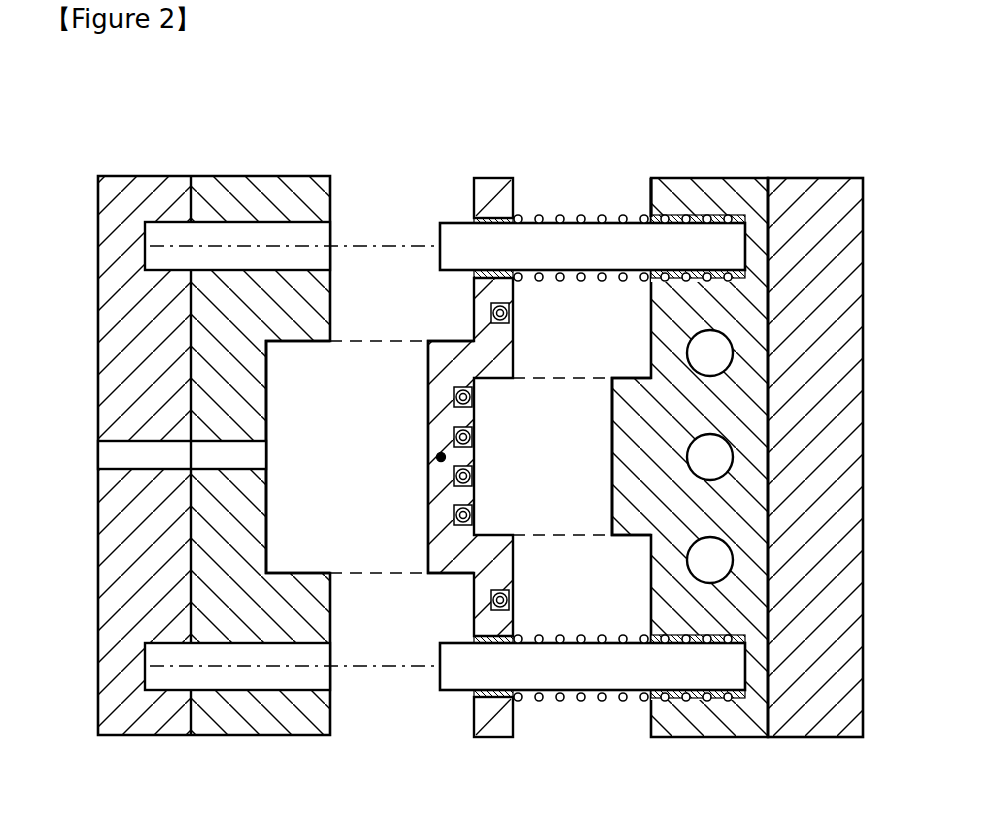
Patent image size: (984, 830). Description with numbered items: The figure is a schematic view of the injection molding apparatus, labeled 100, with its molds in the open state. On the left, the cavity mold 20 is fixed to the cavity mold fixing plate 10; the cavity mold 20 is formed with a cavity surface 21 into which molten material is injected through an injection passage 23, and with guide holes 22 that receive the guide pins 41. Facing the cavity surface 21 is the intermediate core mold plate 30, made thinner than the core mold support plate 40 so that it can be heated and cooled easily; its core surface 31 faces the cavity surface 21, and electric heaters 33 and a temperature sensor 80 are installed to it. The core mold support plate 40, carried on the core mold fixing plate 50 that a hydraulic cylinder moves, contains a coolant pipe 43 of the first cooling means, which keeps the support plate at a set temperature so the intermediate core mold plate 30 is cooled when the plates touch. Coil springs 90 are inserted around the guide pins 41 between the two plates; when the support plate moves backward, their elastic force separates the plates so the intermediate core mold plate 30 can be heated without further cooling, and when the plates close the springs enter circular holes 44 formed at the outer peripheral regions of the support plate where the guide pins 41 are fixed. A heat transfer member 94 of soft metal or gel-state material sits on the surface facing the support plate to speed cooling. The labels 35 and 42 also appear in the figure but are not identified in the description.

The mold apparatus 100 is at (131, 110).
The cavity mold fixing plate 10 is at (100, 697).
The cavity mold 20 is at (252, 737).
The cavity surface 21 is at (268, 555).
The guide holes 22 is at (322, 257).
The injection passage 23 is at (248, 448).
The intermediate core mold plate 30 is at (487, 738).
The core surface 31 is at (428, 540).
The electric heater 33 is at (478, 394).
The seal 35 is at (474, 275).
The core mold support plate 40 is at (722, 740).
The guide pins 41 is at (452, 224).
The cavity 42 is at (612, 440).
The coolant pipe 43 is at (700, 340).
The circular holes 44 is at (675, 220).
The core mold fixing plate 50 is at (808, 740).
The temperature sensor 80 is at (441, 457).
The coil springs 90 is at (558, 215).
The heat transfer member 94 is at (651, 198).